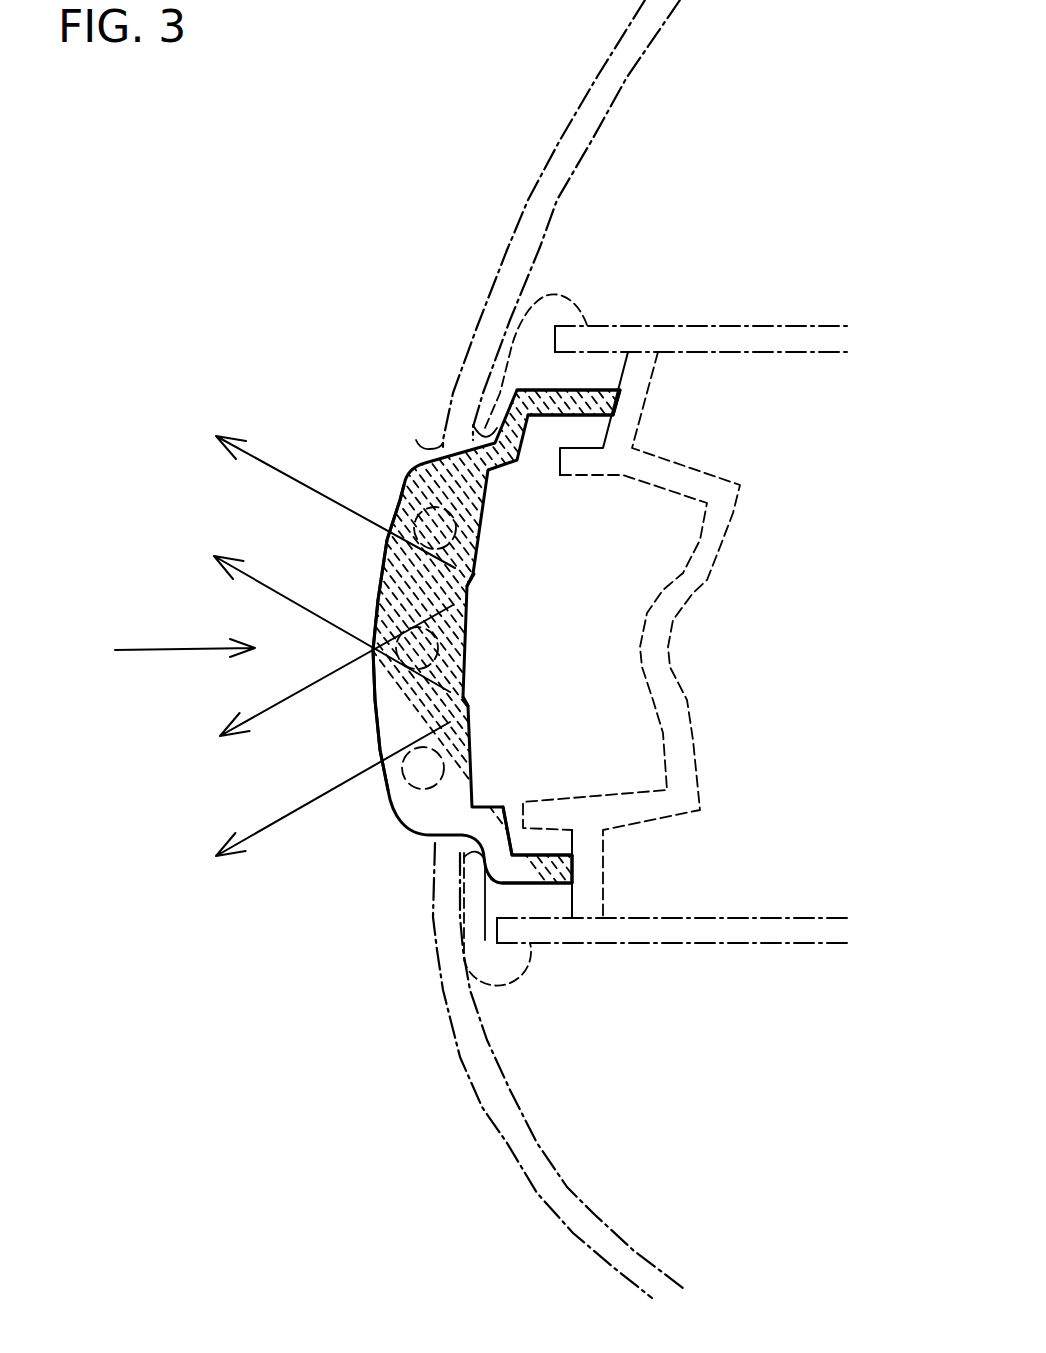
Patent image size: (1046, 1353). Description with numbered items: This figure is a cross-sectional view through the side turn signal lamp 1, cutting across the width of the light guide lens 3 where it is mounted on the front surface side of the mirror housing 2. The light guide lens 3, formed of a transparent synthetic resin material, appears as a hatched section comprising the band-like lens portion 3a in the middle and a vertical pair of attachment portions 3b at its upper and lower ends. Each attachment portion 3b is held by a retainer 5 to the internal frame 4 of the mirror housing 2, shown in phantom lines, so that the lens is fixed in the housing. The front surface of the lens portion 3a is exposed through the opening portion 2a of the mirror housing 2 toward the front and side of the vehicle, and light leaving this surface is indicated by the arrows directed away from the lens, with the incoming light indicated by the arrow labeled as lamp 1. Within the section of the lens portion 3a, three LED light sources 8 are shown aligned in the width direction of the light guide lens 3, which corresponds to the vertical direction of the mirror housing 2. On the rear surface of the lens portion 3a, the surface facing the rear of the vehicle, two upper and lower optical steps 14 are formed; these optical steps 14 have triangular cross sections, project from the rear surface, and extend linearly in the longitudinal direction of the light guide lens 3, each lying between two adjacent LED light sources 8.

The side turn signal lamp 1 is at (166, 649).
The mirror housing 2 is at (507, 250).
The opening portion 2a is at (416, 440).
The light guide lens 3 is at (384, 561).
The lens portion 3a is at (393, 712).
The attachment portions 3b is at (603, 408).
The internal frame 4 is at (750, 326).
The retainers 5 is at (563, 293).
The LED light sources 8 is at (457, 520).
The optical steps 14 is at (476, 585).